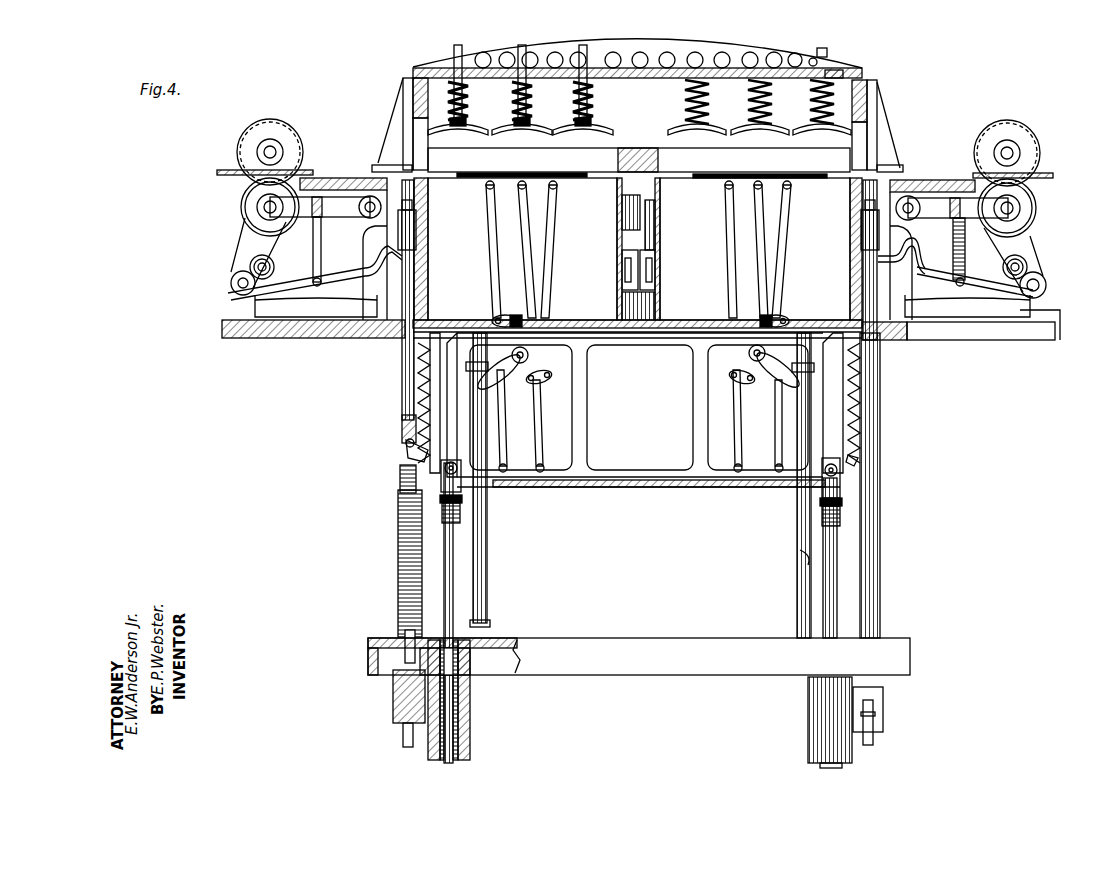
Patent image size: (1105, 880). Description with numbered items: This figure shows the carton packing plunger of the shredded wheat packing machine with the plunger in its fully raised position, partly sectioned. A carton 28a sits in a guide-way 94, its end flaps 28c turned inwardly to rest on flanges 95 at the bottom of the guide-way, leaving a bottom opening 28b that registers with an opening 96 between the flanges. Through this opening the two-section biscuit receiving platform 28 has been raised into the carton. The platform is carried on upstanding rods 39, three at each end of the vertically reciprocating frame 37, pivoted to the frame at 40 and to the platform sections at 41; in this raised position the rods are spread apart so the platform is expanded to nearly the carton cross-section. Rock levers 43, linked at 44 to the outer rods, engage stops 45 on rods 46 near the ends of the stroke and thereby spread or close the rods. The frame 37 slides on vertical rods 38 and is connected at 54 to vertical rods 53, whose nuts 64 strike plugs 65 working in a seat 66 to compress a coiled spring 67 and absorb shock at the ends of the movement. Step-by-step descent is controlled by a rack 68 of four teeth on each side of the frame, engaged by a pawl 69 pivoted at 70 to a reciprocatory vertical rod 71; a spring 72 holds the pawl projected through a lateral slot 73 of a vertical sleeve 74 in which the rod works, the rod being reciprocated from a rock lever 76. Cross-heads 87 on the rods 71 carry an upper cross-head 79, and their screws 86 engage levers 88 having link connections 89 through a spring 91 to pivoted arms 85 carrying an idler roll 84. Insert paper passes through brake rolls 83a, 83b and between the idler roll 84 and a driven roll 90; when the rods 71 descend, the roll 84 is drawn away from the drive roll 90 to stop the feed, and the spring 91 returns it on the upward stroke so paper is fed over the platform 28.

The biscuit receiving platform 28 is at (548, 182).
The carton 28a is at (430, 266).
The bottom opening 28b is at (480, 315).
The bottom flaps 28c is at (588, 318).
The plunger frame 37 is at (670, 340).
The vertical rods 38 is at (800, 550).
The rods 39 is at (522, 224).
The pivot 40 is at (541, 472).
The pivot 41 is at (492, 182).
The rock levers 43 is at (518, 365).
The link connections 44 is at (505, 320).
The stops 45 is at (466, 366).
The rods 46 is at (488, 560).
The vertical rods 53 is at (453, 588).
The connection 54 is at (462, 490).
The nuts 64 is at (462, 505).
The plugs 65 is at (470, 660).
The seat 66 is at (470, 718).
The coiled spring 67 is at (460, 698).
The rack 68 is at (418, 380).
The pawl 69 is at (408, 452).
The pivot 70 is at (405, 443).
The vertical rod 71 is at (402, 300).
The spring 72 is at (405, 470).
The lateral slot 73 is at (398, 528).
The vertical sleeve 74 is at (402, 437).
The rock lever 76 is at (660, 140).
The upper cross-head 79 is at (822, 62).
The brake roll 83a is at (1028, 278).
The brake roll 83b is at (1030, 262).
The idler roll 84 is at (245, 220).
The pivoted arms 85 is at (312, 215).
The screws 86 is at (395, 262).
The cross-heads 87 is at (400, 232).
The levers 88 is at (262, 292).
The link connections 89 is at (964, 280).
The driven roll 90 is at (298, 135).
The spring 91 is at (953, 252).
The guide-way 94 is at (852, 198).
The flanges 95 is at (618, 340).
The opening 96 is at (558, 300).